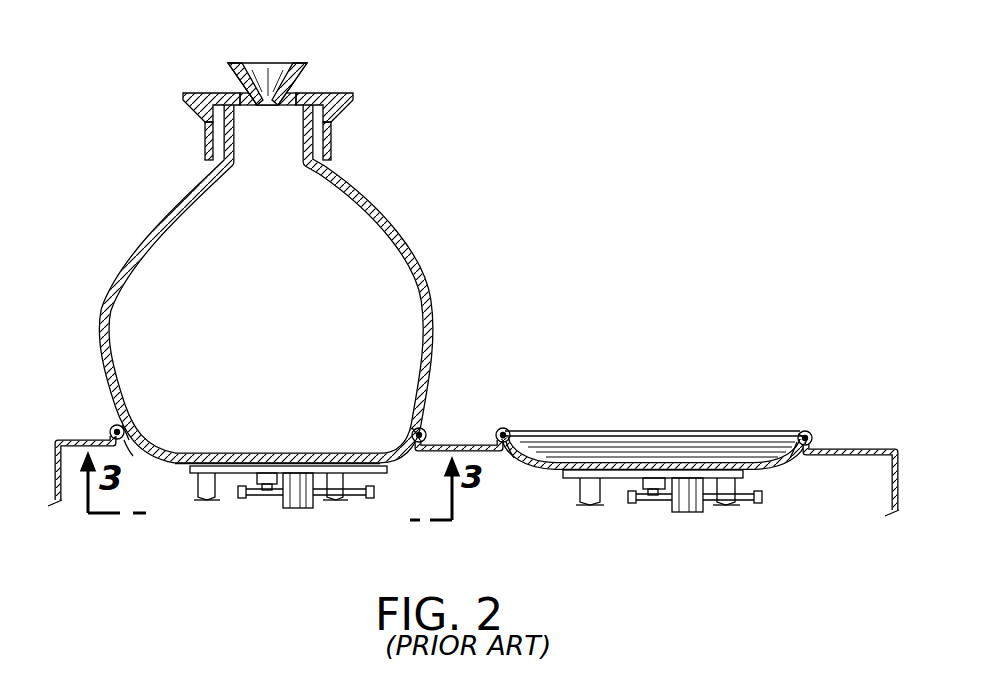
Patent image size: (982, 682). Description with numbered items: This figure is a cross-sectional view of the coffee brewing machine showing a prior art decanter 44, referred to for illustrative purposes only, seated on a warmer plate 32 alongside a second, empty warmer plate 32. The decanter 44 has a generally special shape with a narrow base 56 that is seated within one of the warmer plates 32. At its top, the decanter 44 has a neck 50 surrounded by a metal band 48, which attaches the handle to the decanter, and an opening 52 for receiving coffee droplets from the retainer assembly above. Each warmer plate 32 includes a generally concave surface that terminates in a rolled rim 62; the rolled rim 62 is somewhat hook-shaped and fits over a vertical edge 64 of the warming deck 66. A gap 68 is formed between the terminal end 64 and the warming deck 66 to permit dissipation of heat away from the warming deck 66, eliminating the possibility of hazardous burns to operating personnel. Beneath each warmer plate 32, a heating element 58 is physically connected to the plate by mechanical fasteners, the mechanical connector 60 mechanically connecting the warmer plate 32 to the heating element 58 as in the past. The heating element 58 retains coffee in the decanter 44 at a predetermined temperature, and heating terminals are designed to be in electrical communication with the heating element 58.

The warmer plate 32 is at (273, 466).
The decanter 44 is at (434, 302).
The metal band 48 is at (333, 150).
The neck 50 is at (352, 106).
The opening 52 is at (264, 72).
The narrow base 56 is at (197, 452).
The heating element 58 is at (298, 508).
The mechanical connector 60 is at (265, 488).
The rolled rim 62 is at (130, 412).
The vertical edge 64 is at (124, 450).
The warming deck 66 is at (73, 443).
The gap 68 is at (112, 430).